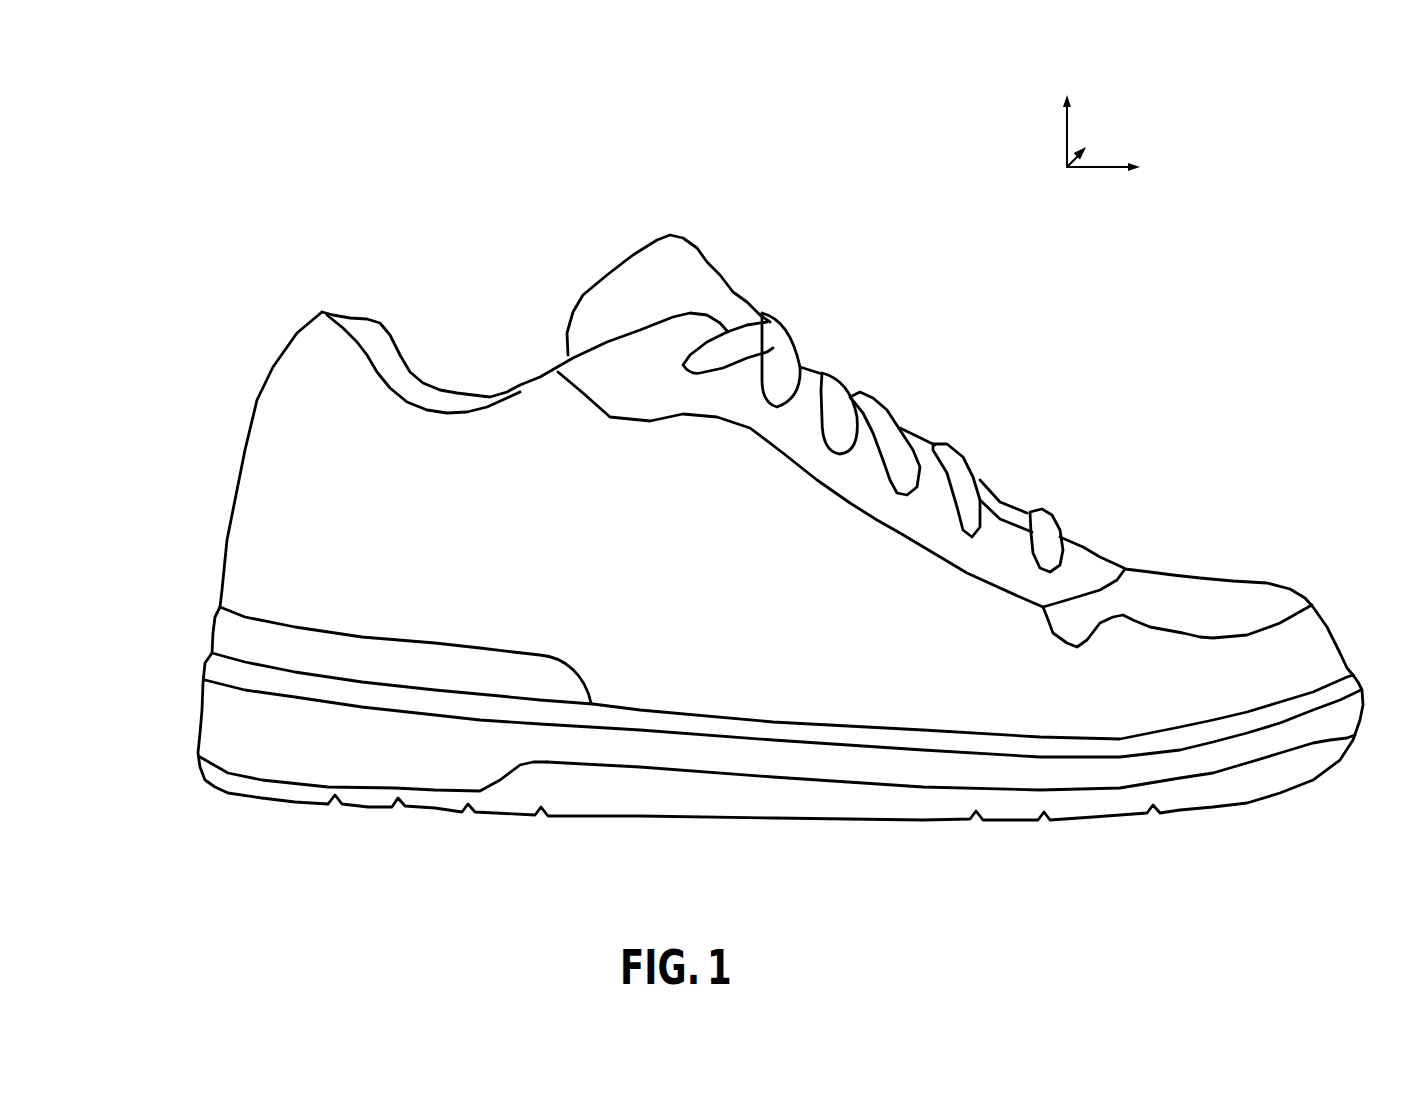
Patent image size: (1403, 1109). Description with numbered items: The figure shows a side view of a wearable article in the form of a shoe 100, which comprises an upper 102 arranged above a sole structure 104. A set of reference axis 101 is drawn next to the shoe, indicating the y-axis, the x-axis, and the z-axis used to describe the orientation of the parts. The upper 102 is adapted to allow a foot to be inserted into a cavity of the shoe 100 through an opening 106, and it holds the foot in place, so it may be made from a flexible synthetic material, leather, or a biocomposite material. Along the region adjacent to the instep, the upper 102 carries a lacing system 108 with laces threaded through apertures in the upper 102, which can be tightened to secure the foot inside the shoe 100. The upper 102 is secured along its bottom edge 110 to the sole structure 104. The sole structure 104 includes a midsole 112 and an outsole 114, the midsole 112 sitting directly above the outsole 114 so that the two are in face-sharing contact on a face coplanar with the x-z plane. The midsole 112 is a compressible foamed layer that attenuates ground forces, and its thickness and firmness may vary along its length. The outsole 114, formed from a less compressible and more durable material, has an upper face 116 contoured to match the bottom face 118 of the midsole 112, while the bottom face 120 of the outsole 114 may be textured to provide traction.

The shoe 100 is at (140, 127).
The reference axis 101 is at (1133, 119).
The upper 102 is at (303, 247).
The sole structure 104 is at (317, 887).
The opening 106 is at (457, 381).
The lacing system 108 is at (900, 430).
The bottom edge 110 is at (923, 730).
The midsole 112 is at (190, 730).
The outsole 114 is at (670, 827).
The upper face 116 is at (557, 767).
The bottom face 118 is at (520, 762).
The bottom face 120 is at (820, 820).